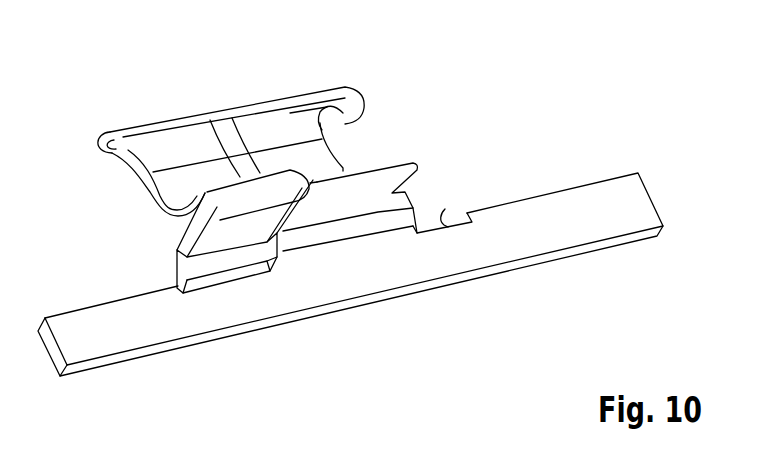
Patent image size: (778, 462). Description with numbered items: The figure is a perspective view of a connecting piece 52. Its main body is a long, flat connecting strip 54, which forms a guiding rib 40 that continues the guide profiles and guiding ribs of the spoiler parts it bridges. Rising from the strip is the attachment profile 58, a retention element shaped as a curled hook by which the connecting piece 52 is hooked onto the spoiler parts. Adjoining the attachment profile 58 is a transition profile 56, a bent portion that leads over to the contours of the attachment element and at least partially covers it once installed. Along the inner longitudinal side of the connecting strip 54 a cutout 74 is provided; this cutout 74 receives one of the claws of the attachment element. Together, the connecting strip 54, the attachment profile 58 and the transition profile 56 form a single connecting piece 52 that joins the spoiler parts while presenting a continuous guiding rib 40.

The guiding rib 40 is at (349, 333).
The connecting piece 52 is at (383, 142).
The connecting strip 54 is at (513, 257).
The transition profile 56 is at (280, 127).
The attachment profile 58 is at (162, 140).
The cutout 74 is at (445, 209).